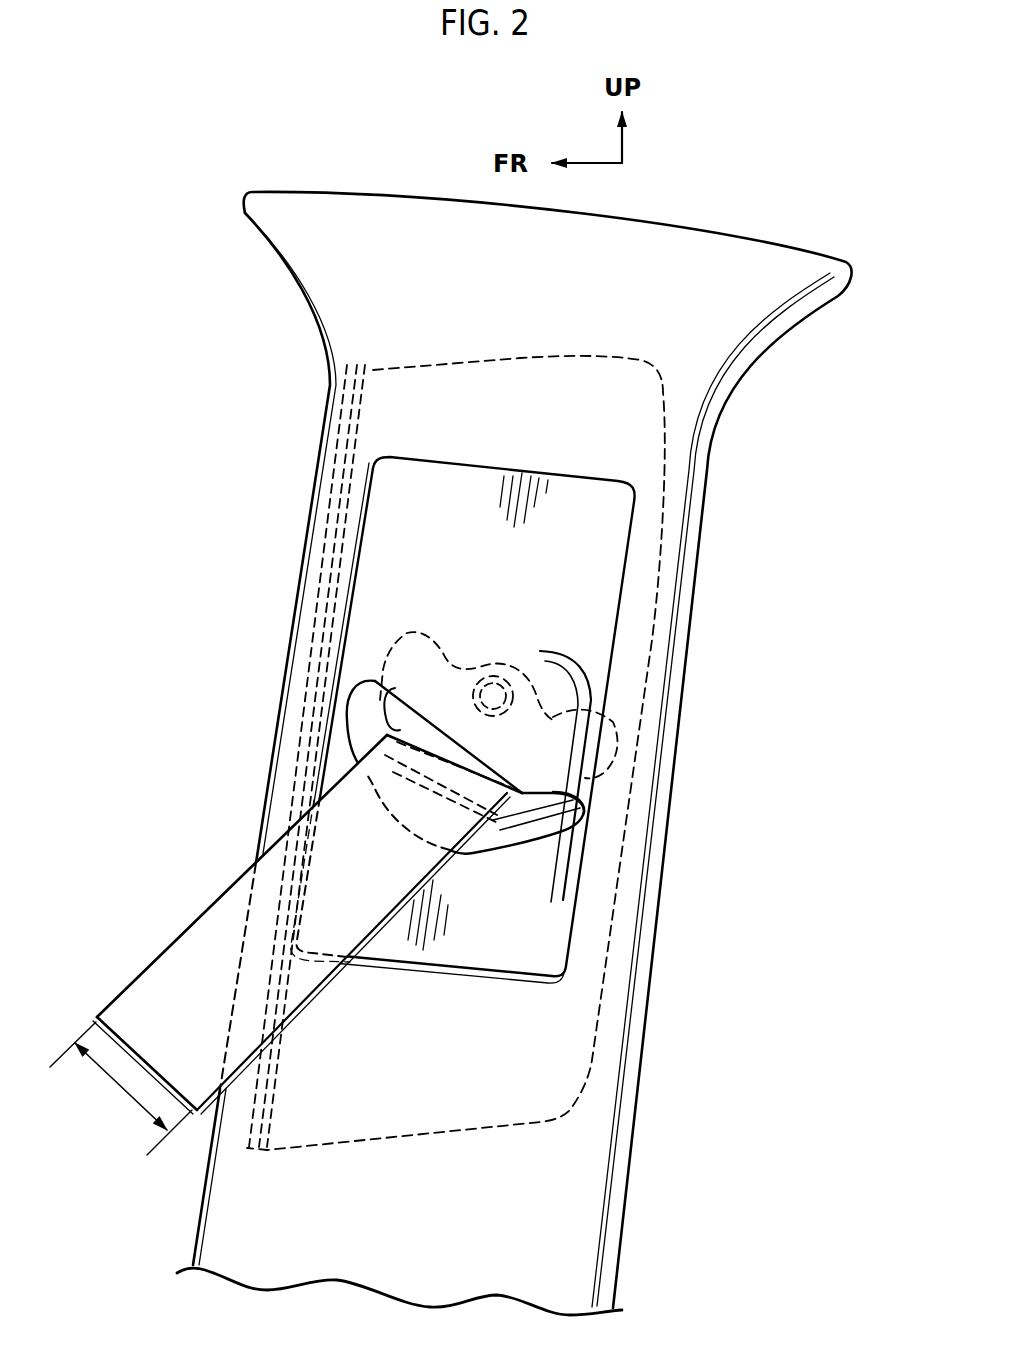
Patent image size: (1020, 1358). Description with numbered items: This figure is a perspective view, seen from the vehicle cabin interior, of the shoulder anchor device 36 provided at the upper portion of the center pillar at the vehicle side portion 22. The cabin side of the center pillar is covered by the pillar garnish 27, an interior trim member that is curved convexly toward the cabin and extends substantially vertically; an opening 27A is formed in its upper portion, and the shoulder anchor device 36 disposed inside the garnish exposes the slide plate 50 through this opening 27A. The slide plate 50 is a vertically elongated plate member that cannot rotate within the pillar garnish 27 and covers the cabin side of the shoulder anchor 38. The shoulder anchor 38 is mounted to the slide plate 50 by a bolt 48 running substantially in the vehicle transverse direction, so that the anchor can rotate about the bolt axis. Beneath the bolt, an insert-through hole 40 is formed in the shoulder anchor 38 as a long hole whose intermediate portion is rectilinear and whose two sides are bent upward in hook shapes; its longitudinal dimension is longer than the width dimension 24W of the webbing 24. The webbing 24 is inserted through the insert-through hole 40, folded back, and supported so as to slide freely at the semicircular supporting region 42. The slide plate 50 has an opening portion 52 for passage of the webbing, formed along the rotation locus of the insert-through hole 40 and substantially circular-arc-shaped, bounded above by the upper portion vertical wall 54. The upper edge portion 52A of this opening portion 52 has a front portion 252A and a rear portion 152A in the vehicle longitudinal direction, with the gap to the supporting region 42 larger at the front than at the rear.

The vehicle side portion 22 is at (268, 390).
The webbing 24 is at (165, 975).
The width dimension 24W is at (113, 1082).
The pillar garnish 27 is at (248, 1173).
The opening 27A is at (352, 552).
The shoulder anchor device 36 is at (591, 619).
The shoulder anchor 38 is at (428, 622).
The insert-through hole 40 is at (397, 700).
The supporting region 42 is at (411, 734).
The bolt 48 is at (503, 673).
The slide plate 50 is at (593, 548).
The opening portion 52 is at (485, 843).
The upper edge portion 52A is at (459, 770).
The rear portion 152A is at (551, 803).
The upper portion vertical wall 54 is at (560, 716).
The front portion 252A is at (390, 697).